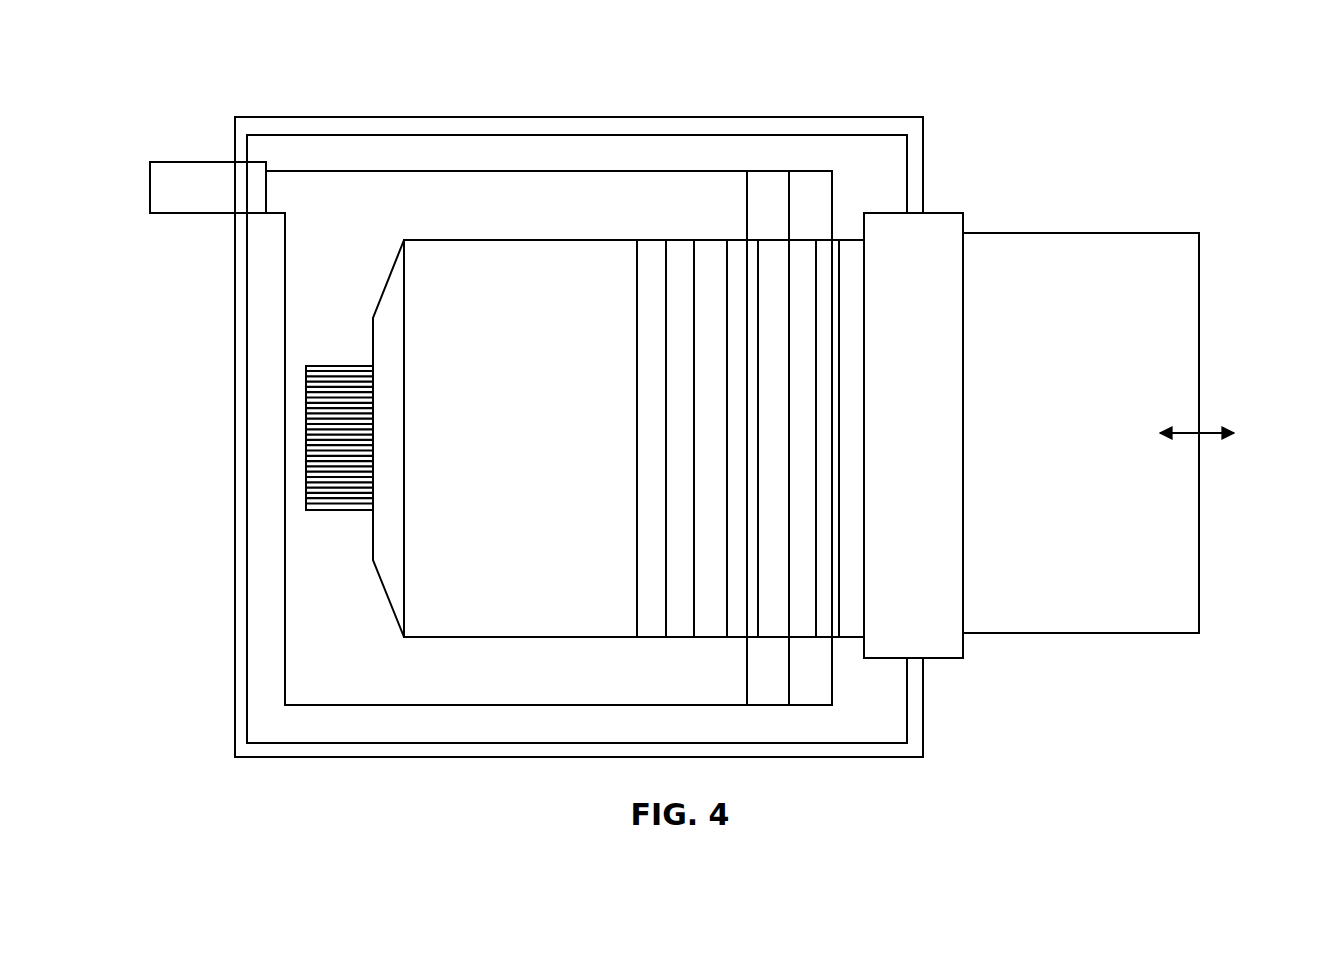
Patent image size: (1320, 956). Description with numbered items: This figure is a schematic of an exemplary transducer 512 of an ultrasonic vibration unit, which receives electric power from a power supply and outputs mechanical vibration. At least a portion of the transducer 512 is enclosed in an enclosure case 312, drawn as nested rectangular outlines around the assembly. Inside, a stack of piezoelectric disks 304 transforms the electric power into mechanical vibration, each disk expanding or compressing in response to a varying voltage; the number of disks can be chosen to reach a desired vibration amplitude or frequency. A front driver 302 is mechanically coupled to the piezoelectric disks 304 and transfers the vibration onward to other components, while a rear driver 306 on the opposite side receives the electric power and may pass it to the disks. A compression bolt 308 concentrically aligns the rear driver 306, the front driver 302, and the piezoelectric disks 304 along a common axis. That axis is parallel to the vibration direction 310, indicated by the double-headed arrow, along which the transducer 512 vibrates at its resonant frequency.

The transducer 512 is at (236, 75).
The front driver 302 is at (1078, 252).
The piezoelectric disks 304 is at (828, 256).
The rear driver 306 is at (518, 260).
The compression bolt 308 is at (303, 462).
The vibration direction 310 is at (1214, 415).
The enclosure case 312 is at (926, 723).